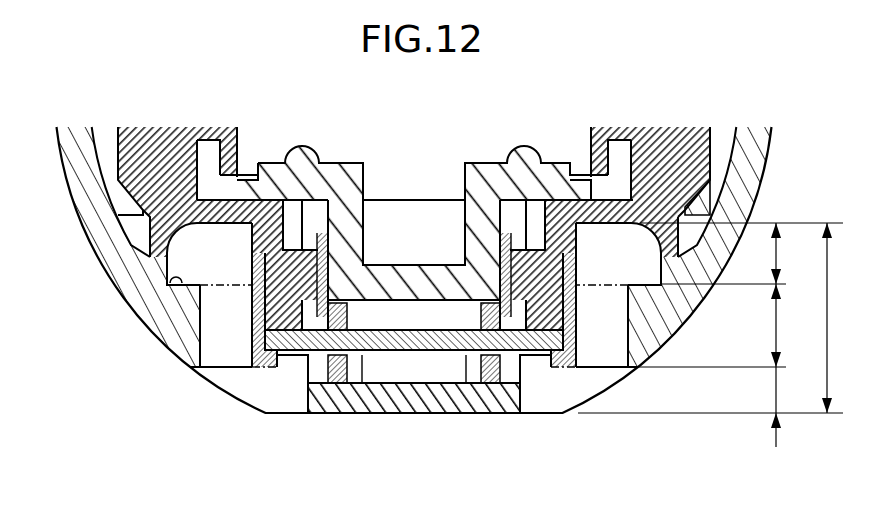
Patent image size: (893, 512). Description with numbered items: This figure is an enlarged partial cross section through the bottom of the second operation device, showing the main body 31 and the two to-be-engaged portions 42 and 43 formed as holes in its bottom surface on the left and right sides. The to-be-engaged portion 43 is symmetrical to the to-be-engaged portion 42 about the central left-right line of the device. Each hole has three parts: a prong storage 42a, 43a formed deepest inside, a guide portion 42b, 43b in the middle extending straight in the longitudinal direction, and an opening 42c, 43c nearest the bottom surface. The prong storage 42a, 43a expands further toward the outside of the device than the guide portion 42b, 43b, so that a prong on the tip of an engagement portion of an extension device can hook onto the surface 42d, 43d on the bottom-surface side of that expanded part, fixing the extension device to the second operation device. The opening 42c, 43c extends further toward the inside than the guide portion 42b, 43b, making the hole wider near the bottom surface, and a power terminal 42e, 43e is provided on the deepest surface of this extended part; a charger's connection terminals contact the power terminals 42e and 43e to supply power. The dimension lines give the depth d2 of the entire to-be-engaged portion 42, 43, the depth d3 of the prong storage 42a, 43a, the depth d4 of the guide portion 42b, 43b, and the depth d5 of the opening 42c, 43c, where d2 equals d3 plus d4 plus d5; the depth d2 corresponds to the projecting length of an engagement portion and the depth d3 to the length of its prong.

The main body 31 is at (94, 250).
The to-be-engaged portion 42 is at (247, 402).
The prong storage 42a is at (252, 258).
The guide portion 42b is at (248, 337).
The opening 42c is at (292, 400).
The surface on the bottom surface side of the expanded portion 42d is at (175, 281).
The power terminal 42e is at (294, 357).
The to-be-engaged portion 43 is at (603, 390).
The prong storage 43a is at (661, 258).
The guide portion 43b is at (627, 338).
The opening 43c is at (580, 400).
The surface on the bottom surface side of the expanded portion 43d is at (677, 322).
The power terminal 43e is at (532, 357).
The depth of the entire to-be-engaged portion d2 is at (723, 318).
The depth of the prong storage d3 is at (740, 253).
The depth of the guide portion d4 is at (729, 325).
The depth of the opening d5 is at (795, 407).